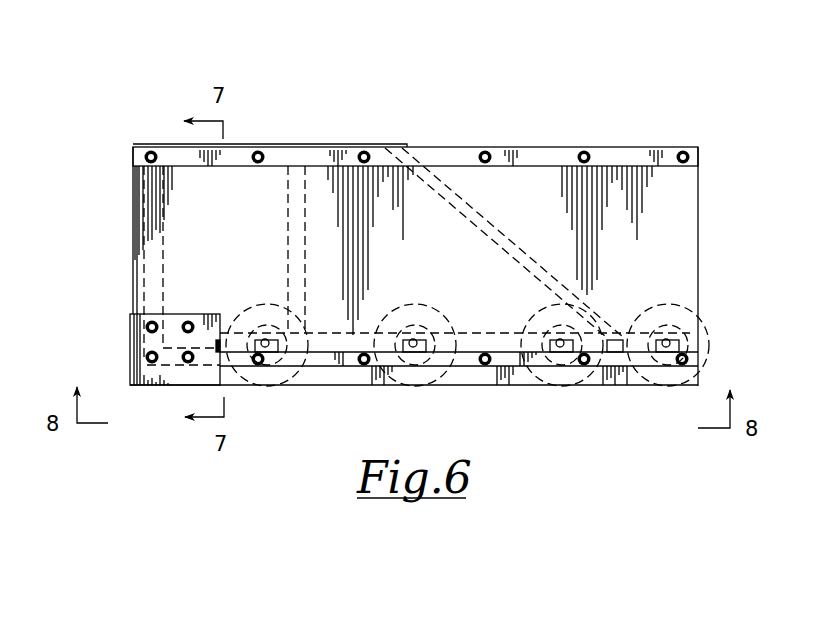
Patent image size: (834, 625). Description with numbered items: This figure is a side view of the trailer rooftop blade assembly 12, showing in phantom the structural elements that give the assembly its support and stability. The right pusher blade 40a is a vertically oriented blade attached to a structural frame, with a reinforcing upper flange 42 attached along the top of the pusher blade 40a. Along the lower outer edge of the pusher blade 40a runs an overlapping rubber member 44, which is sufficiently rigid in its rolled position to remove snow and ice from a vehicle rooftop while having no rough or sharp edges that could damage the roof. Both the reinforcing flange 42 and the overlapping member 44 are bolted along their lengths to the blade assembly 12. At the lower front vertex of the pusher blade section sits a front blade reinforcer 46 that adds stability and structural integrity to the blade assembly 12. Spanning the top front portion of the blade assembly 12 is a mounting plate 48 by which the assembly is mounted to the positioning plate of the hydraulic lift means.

The blade assembly 12 is at (587, 95).
The right pusher blade 40a is at (683, 263).
The reinforcing upper flange 42 is at (610, 157).
The overlapping rubber member 44 is at (487, 383).
The front blade reinforcer 46 is at (140, 328).
The mounting plate 48 is at (345, 145).